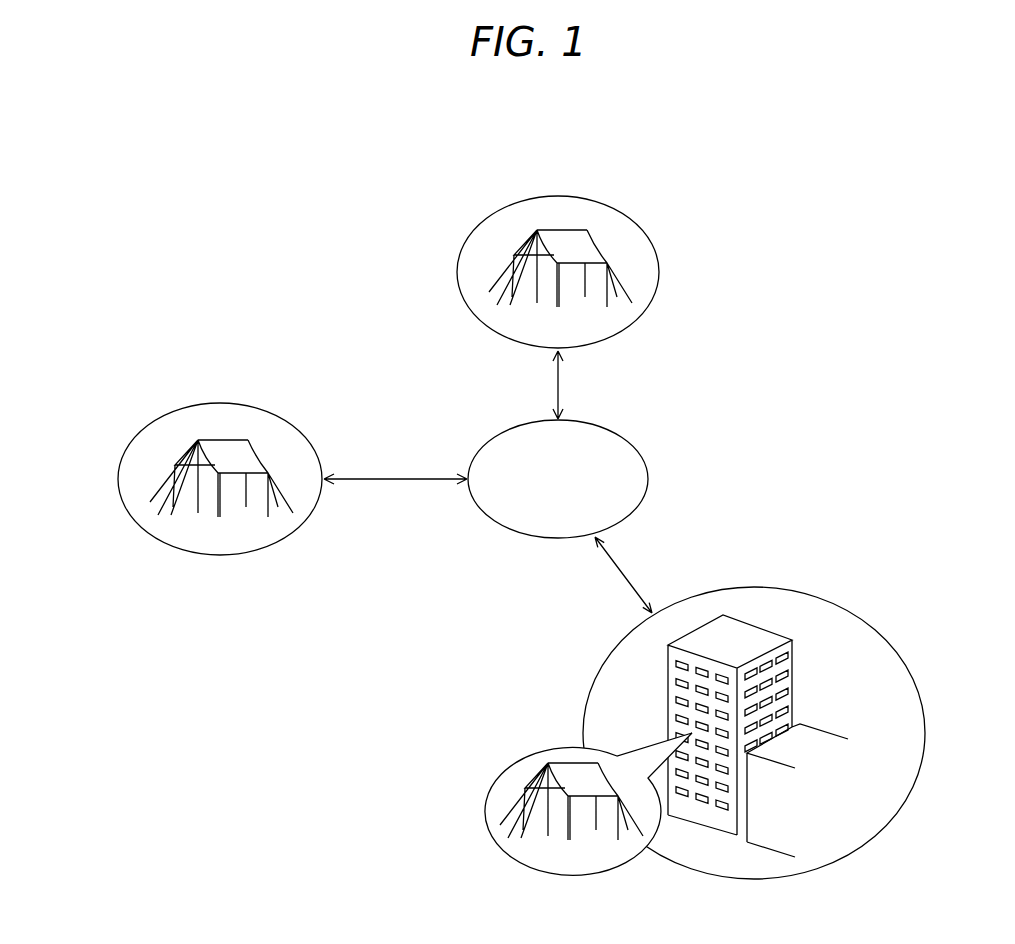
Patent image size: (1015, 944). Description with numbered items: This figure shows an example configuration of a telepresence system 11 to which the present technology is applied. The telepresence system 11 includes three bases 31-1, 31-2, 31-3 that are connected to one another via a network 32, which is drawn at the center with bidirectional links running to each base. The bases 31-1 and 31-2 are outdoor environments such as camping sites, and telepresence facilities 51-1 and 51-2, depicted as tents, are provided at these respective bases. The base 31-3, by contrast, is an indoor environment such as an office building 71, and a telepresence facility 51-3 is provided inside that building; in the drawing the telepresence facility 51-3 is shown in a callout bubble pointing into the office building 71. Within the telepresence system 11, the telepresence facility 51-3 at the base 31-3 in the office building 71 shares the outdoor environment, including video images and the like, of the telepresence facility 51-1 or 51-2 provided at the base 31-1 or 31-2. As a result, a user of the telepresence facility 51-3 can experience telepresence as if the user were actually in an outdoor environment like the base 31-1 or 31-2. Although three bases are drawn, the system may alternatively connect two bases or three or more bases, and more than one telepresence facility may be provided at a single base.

The telepresence system 11 is at (846, 260).
The base 31-1 is at (225, 403).
The base 31-2 is at (557, 197).
The base 31-3 is at (925, 735).
The network 32 is at (534, 539).
The telepresence facility 51-1 is at (160, 486).
The telepresence facility 51-2 is at (503, 275).
The telepresence facility 51-3 is at (513, 808).
The office building 71 is at (795, 683).